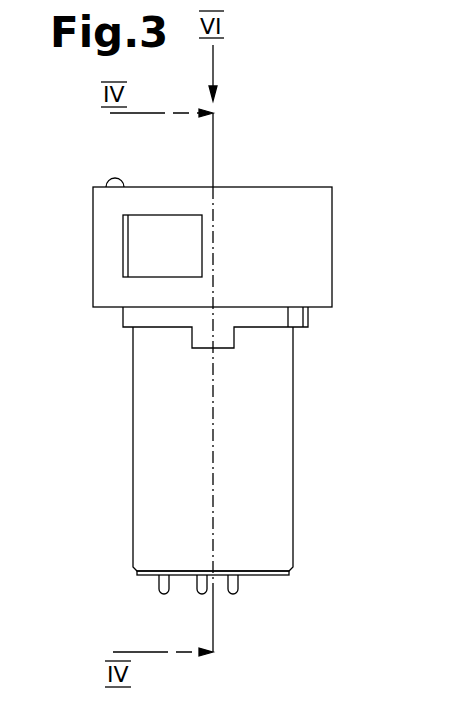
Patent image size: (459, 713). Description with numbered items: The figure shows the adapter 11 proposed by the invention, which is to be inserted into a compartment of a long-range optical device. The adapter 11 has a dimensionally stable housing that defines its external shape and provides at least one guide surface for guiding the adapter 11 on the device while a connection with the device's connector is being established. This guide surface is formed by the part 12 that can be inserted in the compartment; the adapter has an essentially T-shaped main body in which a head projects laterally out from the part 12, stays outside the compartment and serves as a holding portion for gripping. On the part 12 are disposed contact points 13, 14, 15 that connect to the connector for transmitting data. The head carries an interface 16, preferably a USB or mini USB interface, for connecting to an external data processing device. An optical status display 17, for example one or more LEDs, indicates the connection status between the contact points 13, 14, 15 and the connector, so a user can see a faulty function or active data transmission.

The adapter 11 is at (346, 192).
The part insertable in the compartment 12 is at (280, 428).
The contact point 13 is at (238, 590).
The contact point 14 is at (198, 595).
The contact point 15 is at (158, 582).
The interface 16 is at (148, 247).
The optical status display 17 is at (111, 180).